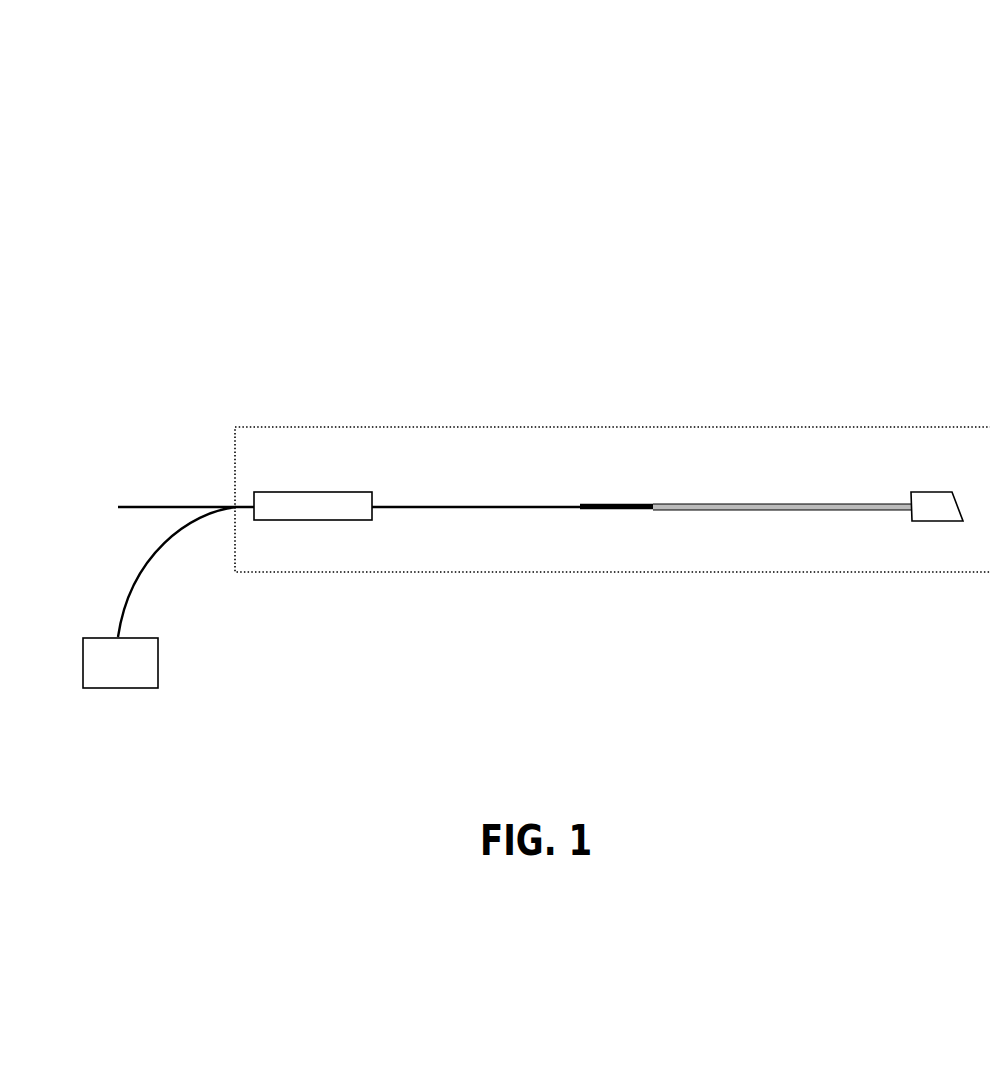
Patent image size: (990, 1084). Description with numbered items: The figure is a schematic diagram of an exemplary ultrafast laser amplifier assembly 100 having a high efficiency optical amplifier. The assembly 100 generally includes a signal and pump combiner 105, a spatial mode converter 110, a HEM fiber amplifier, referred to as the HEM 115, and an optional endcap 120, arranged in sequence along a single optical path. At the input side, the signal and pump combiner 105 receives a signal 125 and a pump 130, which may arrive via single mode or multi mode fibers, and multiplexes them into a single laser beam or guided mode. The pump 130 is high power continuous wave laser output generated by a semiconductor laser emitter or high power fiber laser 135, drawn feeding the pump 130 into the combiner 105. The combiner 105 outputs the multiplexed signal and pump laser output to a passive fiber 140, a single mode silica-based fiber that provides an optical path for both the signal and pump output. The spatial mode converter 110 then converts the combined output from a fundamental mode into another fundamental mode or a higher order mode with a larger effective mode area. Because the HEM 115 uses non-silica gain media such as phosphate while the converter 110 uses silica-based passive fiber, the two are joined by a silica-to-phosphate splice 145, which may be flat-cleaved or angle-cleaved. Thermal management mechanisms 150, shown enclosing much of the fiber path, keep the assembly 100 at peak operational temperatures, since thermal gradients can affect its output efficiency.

The USP laser assembly 100 is at (851, 246).
The signal and pump combiner 105 is at (306, 489).
The spatial mode converter 110 is at (619, 489).
The HEM fiber amplifier 115 is at (771, 492).
The endcap 120 is at (928, 492).
The signal 125 is at (188, 505).
The pump 130 is at (203, 522).
The semiconductor laser emitter or high power fiber laser 135 is at (120, 663).
The passive fiber 140 is at (388, 512).
The silica-to-phosphate splice 145 is at (653, 510).
The thermal management mechanisms 150 is at (626, 573).